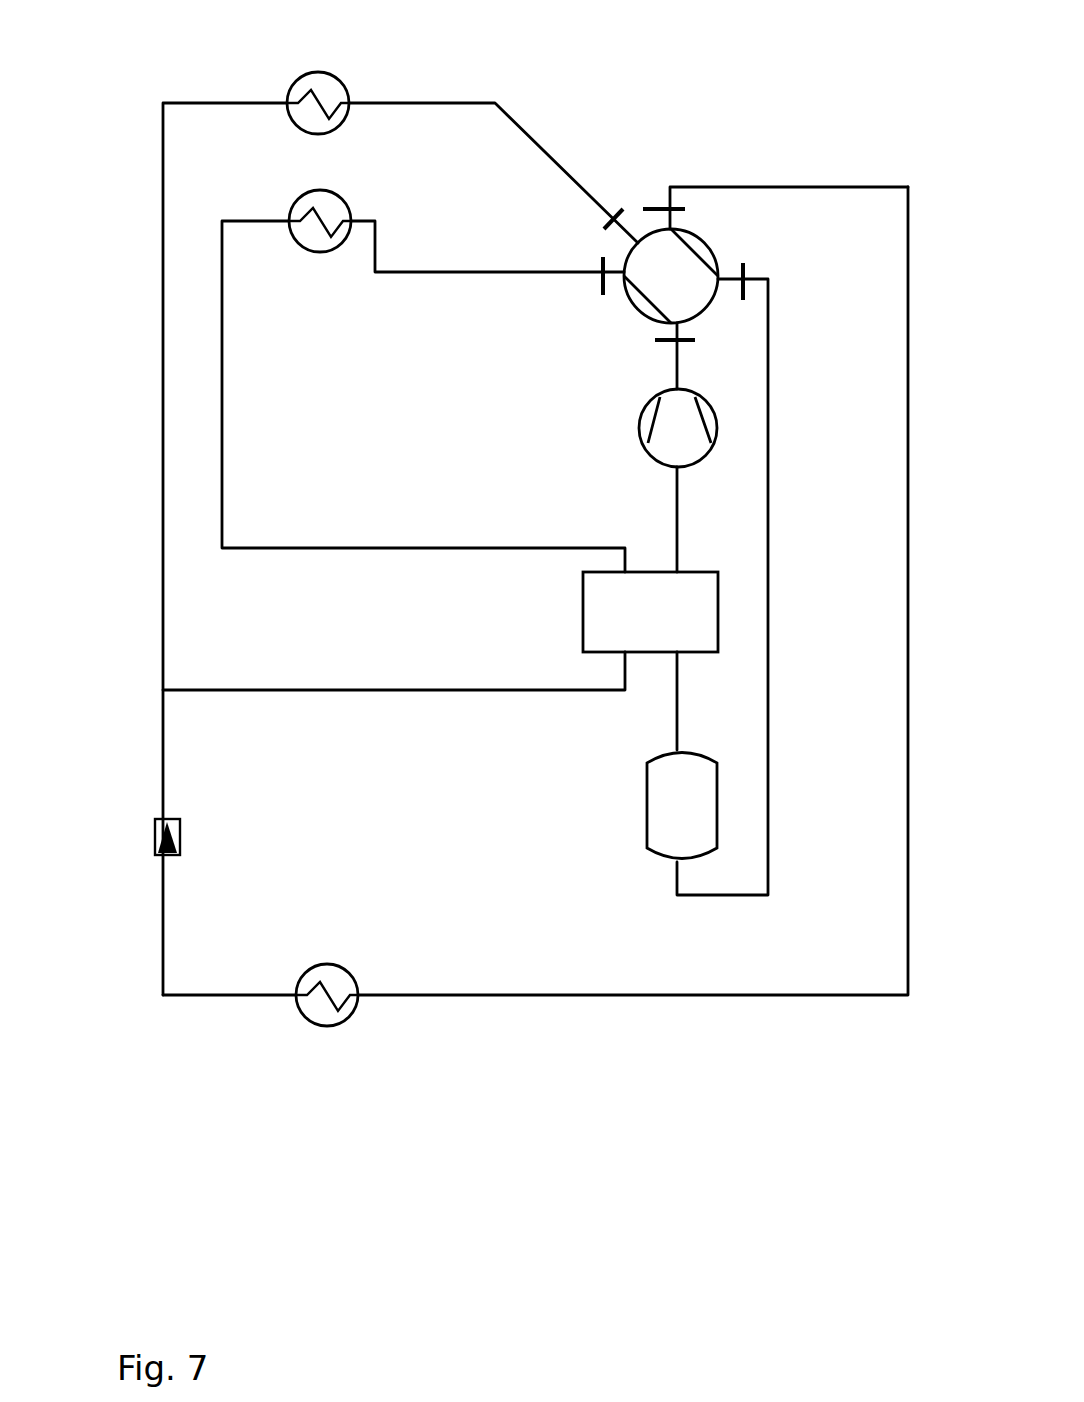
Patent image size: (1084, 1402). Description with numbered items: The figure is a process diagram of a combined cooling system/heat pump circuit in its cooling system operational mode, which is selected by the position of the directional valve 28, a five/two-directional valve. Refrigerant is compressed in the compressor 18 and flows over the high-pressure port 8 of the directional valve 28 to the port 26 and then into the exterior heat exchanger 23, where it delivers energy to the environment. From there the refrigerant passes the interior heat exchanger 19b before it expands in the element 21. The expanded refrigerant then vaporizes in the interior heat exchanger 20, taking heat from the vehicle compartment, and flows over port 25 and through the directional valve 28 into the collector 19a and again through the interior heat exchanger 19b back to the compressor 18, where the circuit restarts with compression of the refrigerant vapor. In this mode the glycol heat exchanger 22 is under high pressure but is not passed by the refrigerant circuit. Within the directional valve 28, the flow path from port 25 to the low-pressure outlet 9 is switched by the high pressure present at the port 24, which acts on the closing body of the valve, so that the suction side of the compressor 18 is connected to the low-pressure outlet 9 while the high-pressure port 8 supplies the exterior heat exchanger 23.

The high-pressure port 8 is at (655, 337).
The low-pressure outlet 9 is at (745, 265).
The compressor 18 is at (678, 433).
The collector 19a is at (647, 805).
The interior heat exchanger 19b is at (592, 620).
The interior heat exchanger 20 is at (297, 1008).
The element 21 is at (153, 838).
The glycol heat exchanger 22 is at (318, 72).
The exterior heat exchanger 23 is at (320, 251).
The port 24 is at (617, 208).
The port 25 is at (643, 209).
The port 26 is at (603, 258).
The directional valve 28 is at (704, 243).